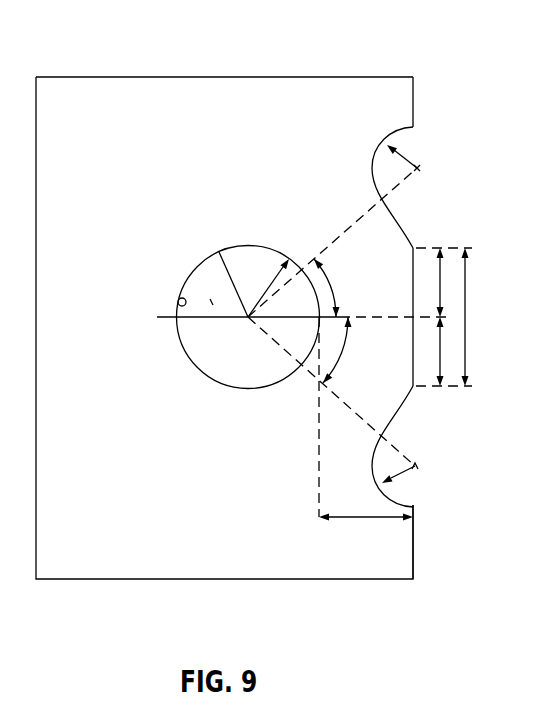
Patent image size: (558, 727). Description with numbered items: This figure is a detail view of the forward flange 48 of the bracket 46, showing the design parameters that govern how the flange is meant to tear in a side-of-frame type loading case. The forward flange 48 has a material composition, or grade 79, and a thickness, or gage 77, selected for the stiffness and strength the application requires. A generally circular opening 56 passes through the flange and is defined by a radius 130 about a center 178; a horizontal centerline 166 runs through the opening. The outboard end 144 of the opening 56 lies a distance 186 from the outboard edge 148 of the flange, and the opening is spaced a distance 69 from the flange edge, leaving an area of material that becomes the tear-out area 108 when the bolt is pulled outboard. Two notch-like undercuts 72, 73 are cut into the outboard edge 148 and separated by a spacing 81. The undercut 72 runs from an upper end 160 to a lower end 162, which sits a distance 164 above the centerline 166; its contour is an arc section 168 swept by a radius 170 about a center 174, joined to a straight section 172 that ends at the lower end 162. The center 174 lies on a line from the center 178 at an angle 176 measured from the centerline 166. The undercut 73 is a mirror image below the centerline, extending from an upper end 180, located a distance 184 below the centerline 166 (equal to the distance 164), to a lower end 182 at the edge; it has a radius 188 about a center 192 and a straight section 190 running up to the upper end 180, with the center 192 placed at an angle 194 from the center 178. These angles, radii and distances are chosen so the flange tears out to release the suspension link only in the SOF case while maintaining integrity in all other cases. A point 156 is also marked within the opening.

The bracket 46 is at (370, 72).
The forward flange 48 is at (97, 535).
The material grade 79 is at (213, 77).
The material gage 77 is at (265, 77).
The outboard edge 148 is at (413, 108).
The arc section 168 is at (383, 145).
The upper end 160 is at (413, 127).
The undercut 72 is at (428, 143).
The center 174 is at (420, 170).
The radius 170 is at (416, 170).
The straight section 172 is at (390, 220).
The lower end 162 is at (413, 248).
The distance 164 is at (413, 280).
The spacing 81 is at (465, 300).
The distance 184 is at (442, 353).
The upper end 180 is at (413, 388).
The angle 176 is at (333, 285).
The angle 194 is at (341, 368).
The radius 130 is at (266, 280).
The center 178 is at (218, 250).
The opening 56 is at (178, 305).
The tear-out area 108 is at (167, 318).
The centerline 166 is at (387, 318).
The bore center point 156 is at (212, 302).
The outboard end 144 is at (317, 320).
The center 192 is at (418, 467).
The radius 188 is at (373, 452).
The straight section 190 is at (378, 433).
The undercut 73 is at (420, 490).
The distance 186 is at (366, 419).
The lower end 182 is at (413, 505).
The distance 69 is at (368, 518).